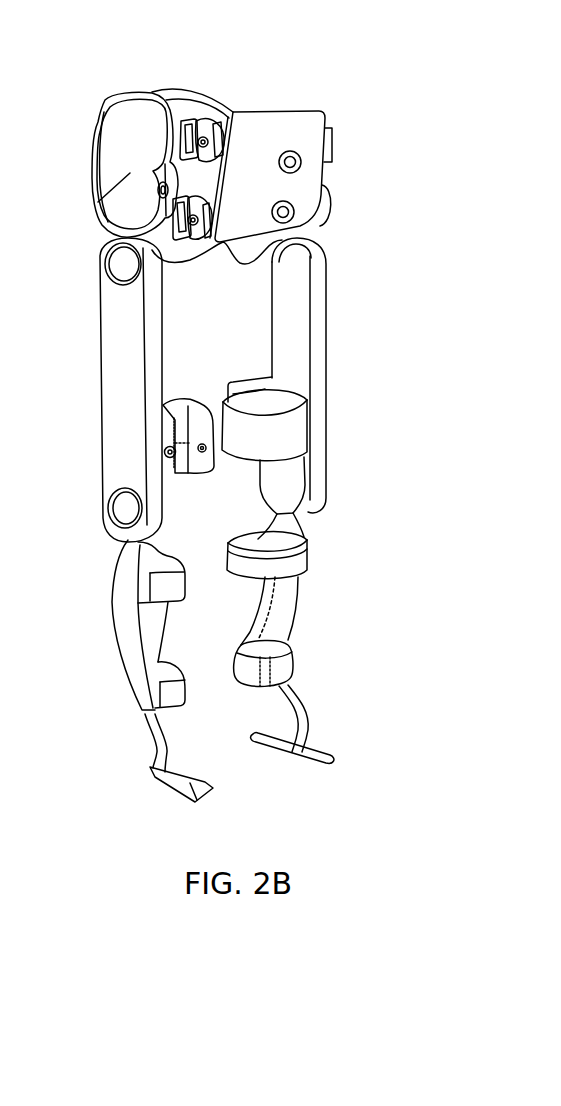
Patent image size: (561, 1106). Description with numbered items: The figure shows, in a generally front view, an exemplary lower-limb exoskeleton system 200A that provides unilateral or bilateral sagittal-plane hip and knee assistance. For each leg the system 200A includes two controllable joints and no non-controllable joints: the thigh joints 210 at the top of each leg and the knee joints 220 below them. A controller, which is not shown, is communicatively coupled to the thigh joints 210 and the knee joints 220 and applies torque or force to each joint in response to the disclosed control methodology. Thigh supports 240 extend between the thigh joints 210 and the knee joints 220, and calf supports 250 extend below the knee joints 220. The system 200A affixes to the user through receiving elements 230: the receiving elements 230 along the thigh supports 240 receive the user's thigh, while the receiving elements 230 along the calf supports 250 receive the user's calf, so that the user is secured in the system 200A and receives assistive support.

The system 200A is at (288, 68).
The thigh joints 210 is at (118, 258).
The knee joints 220 is at (118, 506).
The receiving elements 230 is at (167, 433).
The thigh supports 240 is at (112, 340).
The calf supports 250 is at (131, 633).